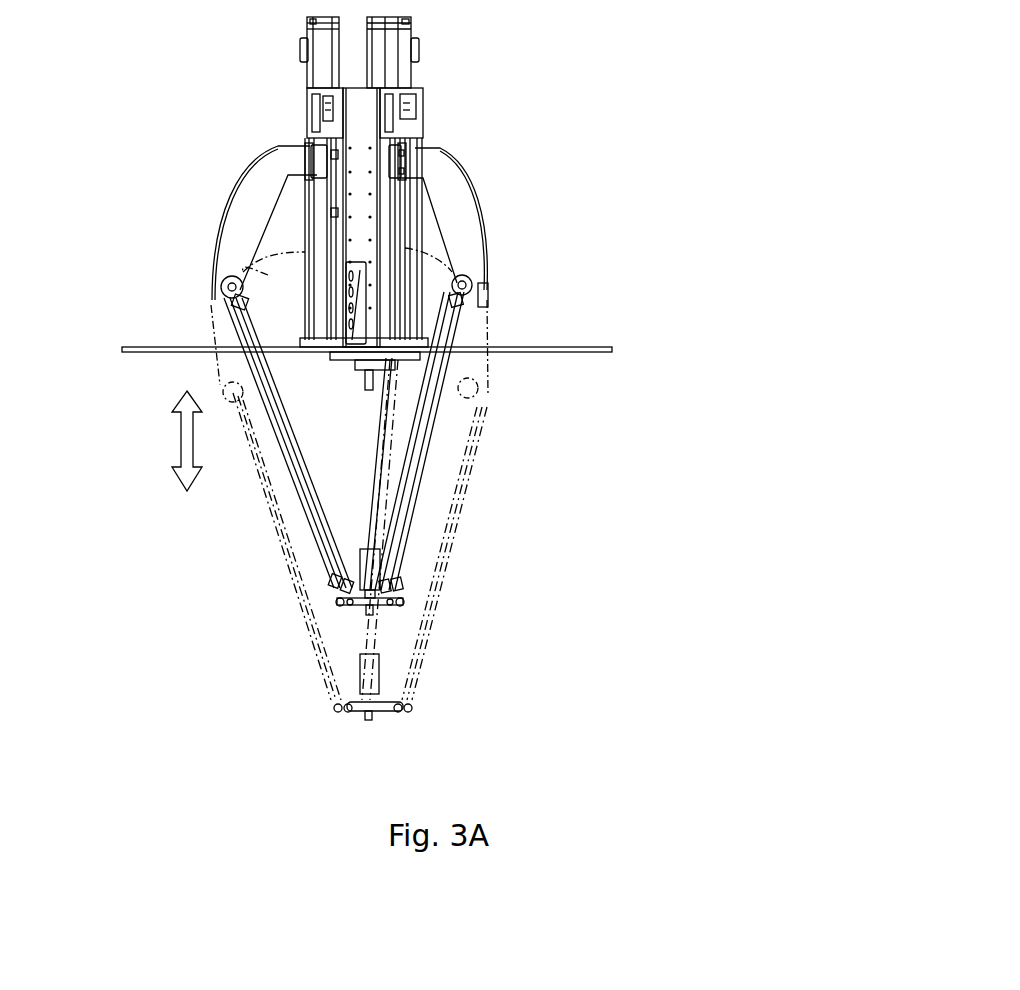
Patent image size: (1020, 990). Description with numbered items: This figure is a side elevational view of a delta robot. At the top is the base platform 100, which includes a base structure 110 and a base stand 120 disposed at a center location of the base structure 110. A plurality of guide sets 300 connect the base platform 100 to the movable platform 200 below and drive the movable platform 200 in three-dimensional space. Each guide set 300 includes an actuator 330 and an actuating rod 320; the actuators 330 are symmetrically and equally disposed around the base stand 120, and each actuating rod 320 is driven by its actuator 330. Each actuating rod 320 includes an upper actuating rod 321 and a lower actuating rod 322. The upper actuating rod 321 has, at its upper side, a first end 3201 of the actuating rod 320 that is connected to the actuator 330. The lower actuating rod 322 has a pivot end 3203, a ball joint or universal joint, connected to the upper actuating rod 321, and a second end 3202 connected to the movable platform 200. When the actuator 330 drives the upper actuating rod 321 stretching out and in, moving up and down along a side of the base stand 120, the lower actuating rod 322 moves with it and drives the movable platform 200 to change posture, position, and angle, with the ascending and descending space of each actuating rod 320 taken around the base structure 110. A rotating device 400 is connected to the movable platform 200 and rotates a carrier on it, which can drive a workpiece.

The base platform 100 is at (147, 98).
The base structure 110 is at (170, 348).
The base stand 120 is at (358, 136).
The guide set 300 is at (786, 140).
The actuator 330 is at (437, 206).
The actuating rod 320 is at (720, 232).
The upper actuating rod 321 is at (470, 223).
The lower actuating rod 322 is at (430, 495).
The first end 3201 is at (397, 160).
The pivot end 3203 is at (478, 298).
The second end 3202 is at (378, 605).
The rotating device 400 is at (370, 563).
The movable platform 200 is at (372, 602).